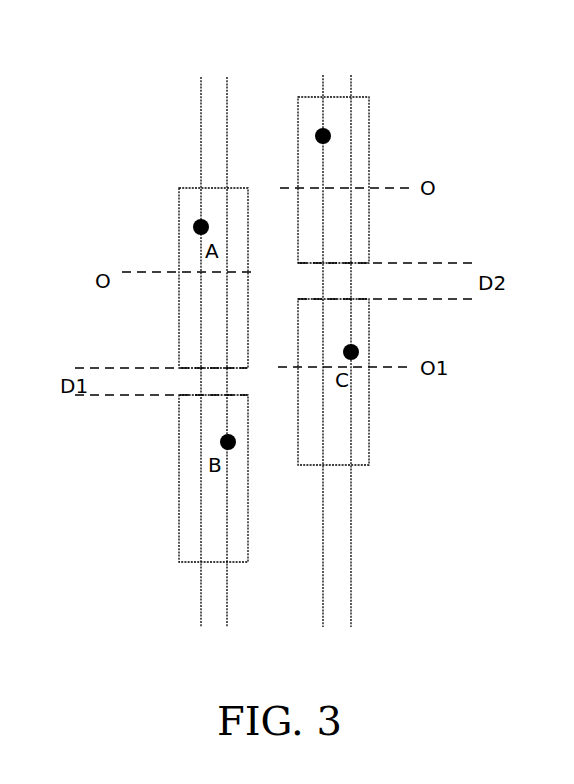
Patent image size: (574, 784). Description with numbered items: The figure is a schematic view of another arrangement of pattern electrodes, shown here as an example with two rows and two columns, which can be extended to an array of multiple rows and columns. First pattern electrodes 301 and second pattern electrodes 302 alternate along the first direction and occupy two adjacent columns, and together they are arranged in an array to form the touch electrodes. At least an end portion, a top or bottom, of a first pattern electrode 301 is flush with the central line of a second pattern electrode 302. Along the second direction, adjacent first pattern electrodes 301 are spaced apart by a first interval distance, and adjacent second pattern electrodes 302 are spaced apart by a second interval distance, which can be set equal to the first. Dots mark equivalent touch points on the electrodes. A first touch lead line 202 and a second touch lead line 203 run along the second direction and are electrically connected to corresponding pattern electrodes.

The first touch lead line 202 is at (201, 98).
The second touch lead line 203 is at (227, 98).
The first pattern electrode 301 is at (178, 208).
The second pattern electrode 302 is at (369, 134).